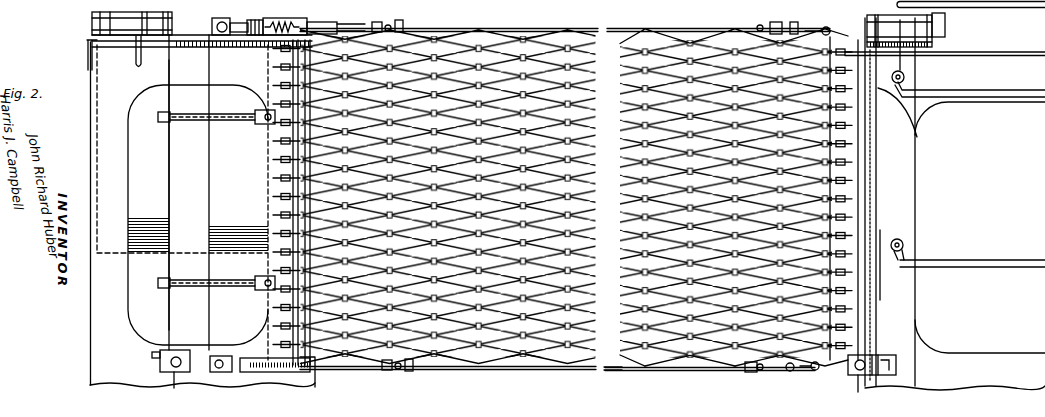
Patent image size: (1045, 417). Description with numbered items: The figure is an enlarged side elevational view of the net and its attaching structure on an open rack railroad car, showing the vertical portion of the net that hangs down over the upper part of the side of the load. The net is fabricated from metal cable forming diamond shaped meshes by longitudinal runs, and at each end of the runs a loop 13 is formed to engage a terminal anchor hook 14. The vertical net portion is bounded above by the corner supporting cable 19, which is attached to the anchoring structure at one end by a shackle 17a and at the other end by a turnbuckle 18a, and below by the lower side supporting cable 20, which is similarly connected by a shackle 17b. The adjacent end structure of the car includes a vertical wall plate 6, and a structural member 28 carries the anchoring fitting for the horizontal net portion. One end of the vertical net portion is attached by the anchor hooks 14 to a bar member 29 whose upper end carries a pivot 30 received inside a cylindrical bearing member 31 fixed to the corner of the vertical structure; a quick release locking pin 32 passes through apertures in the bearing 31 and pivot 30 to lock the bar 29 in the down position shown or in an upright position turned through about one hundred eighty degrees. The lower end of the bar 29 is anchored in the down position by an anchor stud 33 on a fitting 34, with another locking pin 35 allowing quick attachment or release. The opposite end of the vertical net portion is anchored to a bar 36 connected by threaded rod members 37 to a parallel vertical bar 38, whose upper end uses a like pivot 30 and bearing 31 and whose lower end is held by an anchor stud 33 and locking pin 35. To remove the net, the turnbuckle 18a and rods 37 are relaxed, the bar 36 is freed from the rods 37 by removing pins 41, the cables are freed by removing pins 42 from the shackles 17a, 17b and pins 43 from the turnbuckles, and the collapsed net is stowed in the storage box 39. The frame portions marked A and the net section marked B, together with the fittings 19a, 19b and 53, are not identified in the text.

The frame A is at (90, 367).
The mesh section B is at (673, 58).
The vertical wall plate 6 is at (879, 228).
The loop 13 is at (838, 137).
The anchor hook 14 is at (843, 147).
The shackle 17a is at (818, 27).
The shackle 17b is at (803, 378).
The turnbuckle 18a is at (331, 15).
The corner supporting cable 19 is at (486, 8).
The upper mesh connector 19a is at (292, 18).
The lower mesh connector 19b is at (318, 381).
The lower side supporting cable 20 is at (503, 369).
The structural member 28 is at (88, 45).
The bar member 29 is at (860, 204).
The pivot 30 is at (90, 25).
The cylindrical bearing member 31 is at (127, 48).
The quick release locking pin 32 is at (141, 56).
The anchor stud 33 is at (177, 355).
The fitting 34 is at (898, 368).
The locking pin 35 is at (168, 381).
The bar 36 is at (266, 200).
The threaded rod member 37 is at (255, 123).
The parallel vertical bar 38 is at (178, 173).
The storage box 39 is at (158, 210).
The pin 41 is at (270, 122).
The pin 42 is at (826, 28).
The pin 43 is at (221, 356).
The block 53 is at (166, 350).